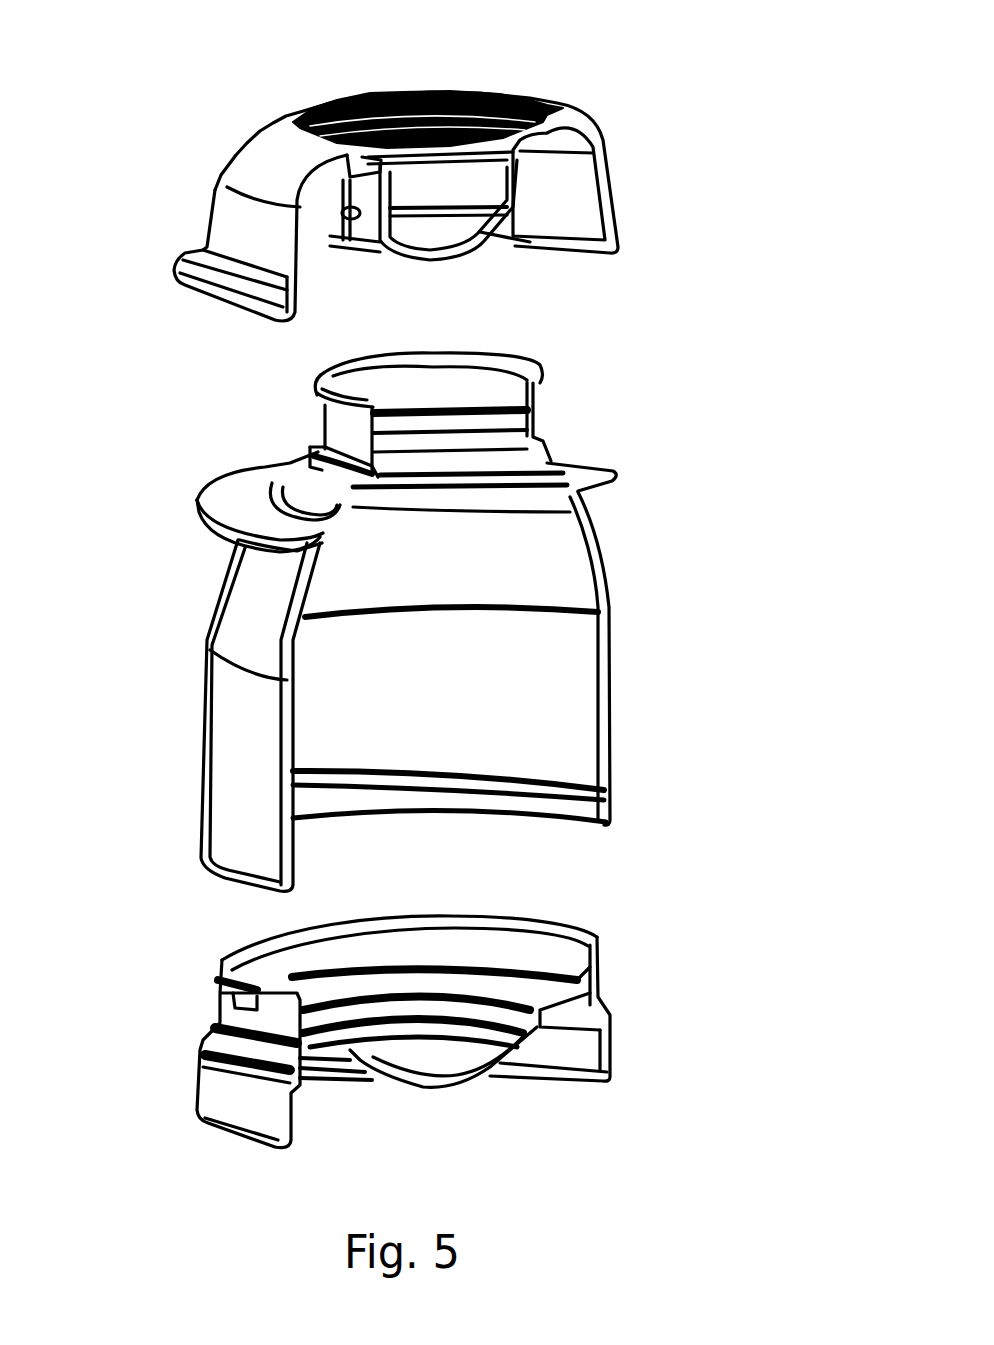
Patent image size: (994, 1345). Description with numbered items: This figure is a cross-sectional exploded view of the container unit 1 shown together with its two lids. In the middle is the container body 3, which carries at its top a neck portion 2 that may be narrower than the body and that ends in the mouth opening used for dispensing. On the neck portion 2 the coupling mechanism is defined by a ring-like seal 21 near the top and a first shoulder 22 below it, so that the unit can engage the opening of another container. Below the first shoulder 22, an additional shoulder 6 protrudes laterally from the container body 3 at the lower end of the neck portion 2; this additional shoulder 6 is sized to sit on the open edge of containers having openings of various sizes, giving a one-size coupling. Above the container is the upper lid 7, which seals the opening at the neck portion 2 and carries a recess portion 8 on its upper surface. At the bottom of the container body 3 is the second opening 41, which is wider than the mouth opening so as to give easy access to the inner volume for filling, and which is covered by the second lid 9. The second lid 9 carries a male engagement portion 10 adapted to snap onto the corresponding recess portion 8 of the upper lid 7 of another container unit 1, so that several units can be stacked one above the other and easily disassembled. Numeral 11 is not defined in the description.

The container unit 1 is at (722, 139).
The neck portion 2 is at (318, 424).
The container body 3 is at (207, 707).
The additional shoulder 6 is at (197, 505).
The upper lid 7 is at (213, 193).
The recess portion 8 is at (388, 110).
The second lid 9 is at (197, 1083).
The male engagement portion 10 is at (467, 1073).
The inner cup of cap 11 is at (480, 252).
The ring-like seal 21 is at (541, 367).
The first shoulder 22 is at (313, 451).
The second opening 41 is at (503, 833).